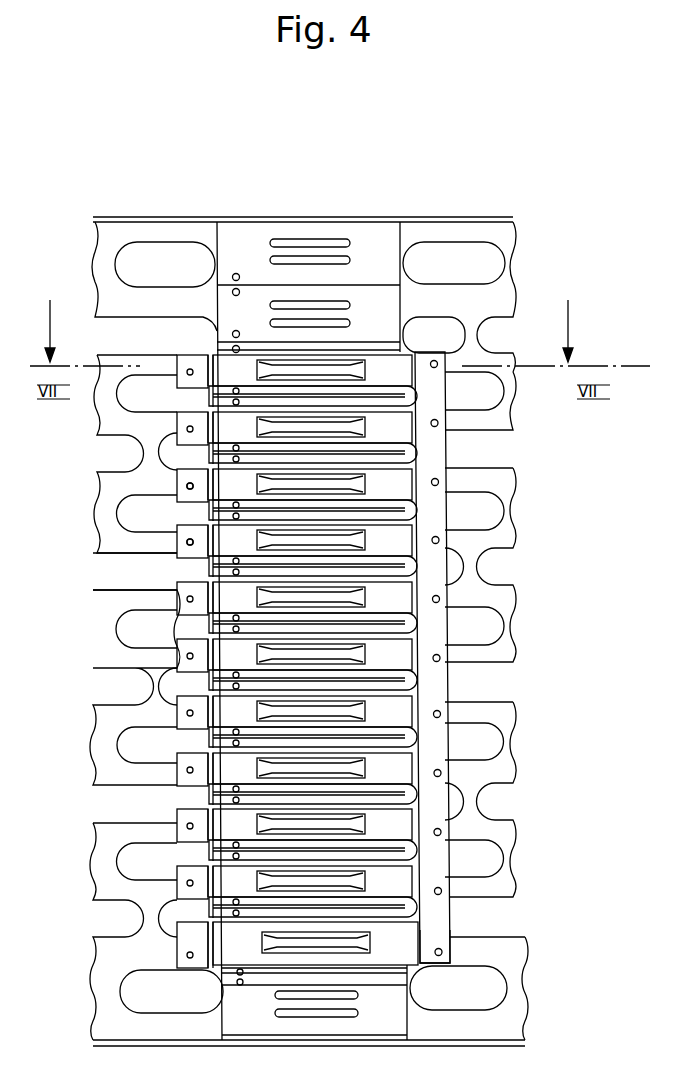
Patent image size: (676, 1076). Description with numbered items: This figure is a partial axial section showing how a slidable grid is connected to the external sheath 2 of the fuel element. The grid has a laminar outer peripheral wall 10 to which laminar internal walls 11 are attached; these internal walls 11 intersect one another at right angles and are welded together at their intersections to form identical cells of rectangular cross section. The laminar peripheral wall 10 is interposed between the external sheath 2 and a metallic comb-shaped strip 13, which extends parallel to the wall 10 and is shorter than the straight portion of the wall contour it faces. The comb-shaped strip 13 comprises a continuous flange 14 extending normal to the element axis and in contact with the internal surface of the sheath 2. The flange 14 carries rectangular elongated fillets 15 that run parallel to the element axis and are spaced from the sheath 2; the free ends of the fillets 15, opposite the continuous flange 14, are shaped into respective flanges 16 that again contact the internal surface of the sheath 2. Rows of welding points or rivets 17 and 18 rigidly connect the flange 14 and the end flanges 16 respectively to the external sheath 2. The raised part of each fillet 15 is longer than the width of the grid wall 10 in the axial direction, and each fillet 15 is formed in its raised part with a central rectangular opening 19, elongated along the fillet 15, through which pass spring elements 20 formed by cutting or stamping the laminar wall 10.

The external sheath 2 is at (107, 947).
The laminar outer peripheral wall 10 is at (366, 232).
The laminar internal walls 11 is at (232, 801).
The comb-shaped strip 13 is at (454, 917).
The continuous flange 14 is at (447, 456).
The fillet 15 is at (397, 366).
The end flange 16 is at (183, 584).
The welding points or rivets 17 is at (441, 714).
The welding points or rivets 18 is at (188, 542).
The central rectangular opening 19 is at (362, 651).
The spring elements 20 is at (318, 316).